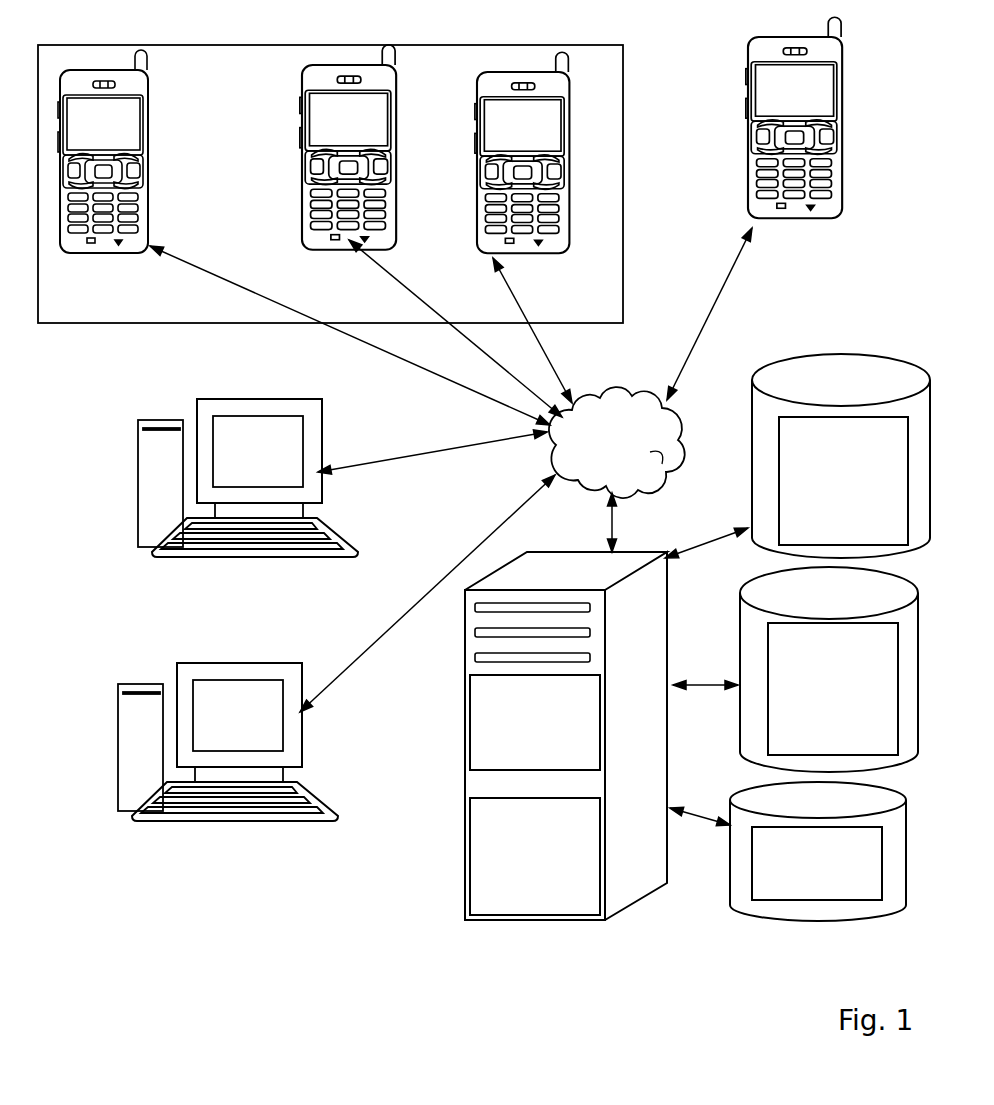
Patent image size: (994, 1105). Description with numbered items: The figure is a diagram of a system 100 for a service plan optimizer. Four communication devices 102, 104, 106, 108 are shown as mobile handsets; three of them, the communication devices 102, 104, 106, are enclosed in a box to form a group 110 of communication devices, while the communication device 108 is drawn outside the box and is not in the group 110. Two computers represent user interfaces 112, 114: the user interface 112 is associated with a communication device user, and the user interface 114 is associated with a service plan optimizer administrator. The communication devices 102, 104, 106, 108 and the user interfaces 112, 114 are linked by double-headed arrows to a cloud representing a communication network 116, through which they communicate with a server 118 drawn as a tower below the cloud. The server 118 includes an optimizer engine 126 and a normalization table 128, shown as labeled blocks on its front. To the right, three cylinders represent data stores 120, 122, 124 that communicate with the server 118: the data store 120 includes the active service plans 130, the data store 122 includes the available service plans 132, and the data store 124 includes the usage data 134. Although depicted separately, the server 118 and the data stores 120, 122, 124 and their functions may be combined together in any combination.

The system 100 is at (484, 483).
The communication device 102 is at (97, 253).
The communication device 104 is at (330, 252).
The communication device 106 is at (550, 253).
The communication device 108 is at (785, 218).
The group of communication devices 110 is at (128, 315).
The user interface 112 is at (313, 557).
The user interface 114 is at (313, 823).
The communication network 116 is at (580, 487).
The server 118 is at (517, 736).
The data store 120 is at (767, 537).
The data store 122 is at (750, 752).
The data store 124 is at (760, 917).
The optimizer engine 126 is at (535, 722).
The normalization table 128 is at (535, 856).
The active service plans 130 is at (841, 456).
The available service plans 132 is at (829, 669).
The usage data 134 is at (818, 851).